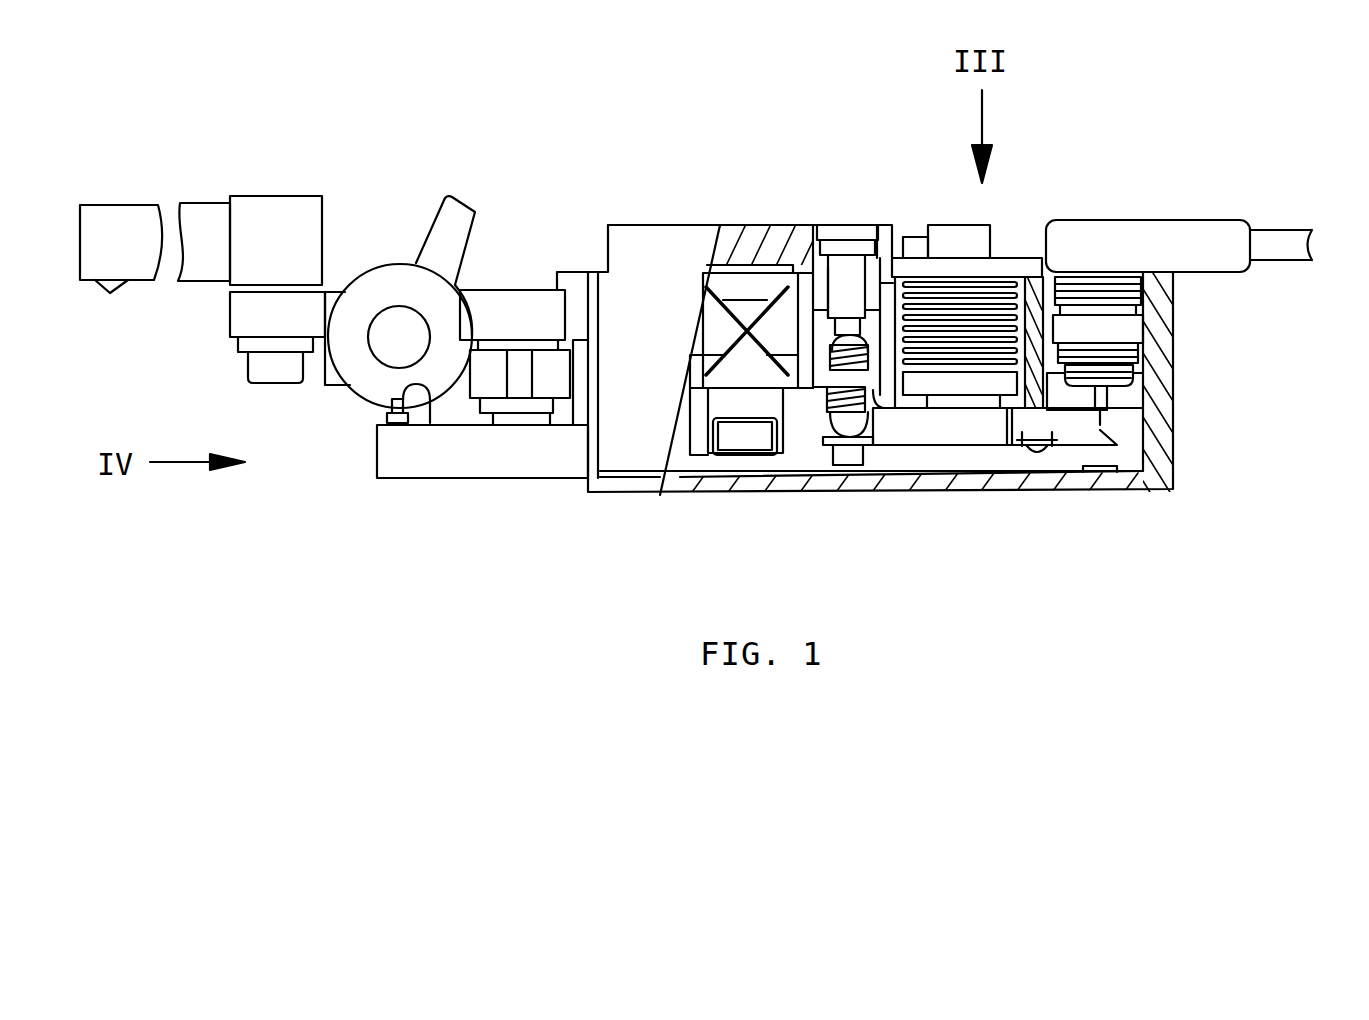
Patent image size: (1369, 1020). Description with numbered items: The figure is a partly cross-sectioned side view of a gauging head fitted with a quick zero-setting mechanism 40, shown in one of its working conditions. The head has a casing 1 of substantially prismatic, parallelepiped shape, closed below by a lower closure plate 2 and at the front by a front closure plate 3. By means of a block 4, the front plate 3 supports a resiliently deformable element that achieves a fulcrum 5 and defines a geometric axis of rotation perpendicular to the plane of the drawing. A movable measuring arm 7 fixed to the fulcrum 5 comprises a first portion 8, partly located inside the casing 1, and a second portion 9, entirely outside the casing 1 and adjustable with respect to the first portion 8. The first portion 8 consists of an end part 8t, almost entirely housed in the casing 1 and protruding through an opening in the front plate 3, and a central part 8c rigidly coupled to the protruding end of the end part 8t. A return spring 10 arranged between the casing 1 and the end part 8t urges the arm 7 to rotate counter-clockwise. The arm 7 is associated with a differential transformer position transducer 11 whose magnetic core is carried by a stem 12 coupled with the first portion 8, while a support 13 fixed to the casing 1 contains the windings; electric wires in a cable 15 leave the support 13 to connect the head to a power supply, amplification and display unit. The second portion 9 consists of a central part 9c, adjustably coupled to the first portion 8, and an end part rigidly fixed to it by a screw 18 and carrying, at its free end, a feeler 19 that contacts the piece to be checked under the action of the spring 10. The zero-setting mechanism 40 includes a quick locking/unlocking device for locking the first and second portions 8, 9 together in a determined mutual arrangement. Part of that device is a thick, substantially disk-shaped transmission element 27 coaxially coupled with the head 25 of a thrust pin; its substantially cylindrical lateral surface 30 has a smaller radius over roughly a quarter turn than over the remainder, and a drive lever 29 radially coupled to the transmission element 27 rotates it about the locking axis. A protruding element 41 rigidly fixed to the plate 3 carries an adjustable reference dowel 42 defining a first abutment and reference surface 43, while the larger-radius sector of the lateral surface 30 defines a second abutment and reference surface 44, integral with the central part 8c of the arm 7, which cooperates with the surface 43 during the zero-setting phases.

The casing 1 is at (655, 235).
The lower closure plate 2 is at (1116, 478).
The front closure plate 3 is at (591, 290).
The block 4 is at (750, 285).
The fulcrum 5 is at (740, 352).
The movable measuring arm 7 is at (206, 303).
The first portion 8 is at (997, 470).
The central part 8c is at (525, 308).
The end part 8t is at (555, 385).
The second portion 9 is at (303, 182).
The central part 9c is at (268, 313).
The spring 10 is at (820, 400).
The differential transformer position transducer 11 is at (1132, 400).
The stem 12 is at (1100, 402).
The support 13 is at (1127, 333).
The cable 15 is at (1265, 248).
The screw 18 is at (268, 370).
The feeler 19 is at (101, 290).
The head 25 is at (393, 325).
The transmission element 27 is at (433, 305).
The drive lever 29 is at (440, 233).
The lateral surface 30 is at (342, 400).
The zero-setting mechanism 40 is at (363, 243).
The protruding element 41 is at (478, 455).
The reference dowel 42 is at (397, 413).
The first abutment and reference surface 43 is at (422, 395).
The second abutment and reference surface 44 is at (376, 418).